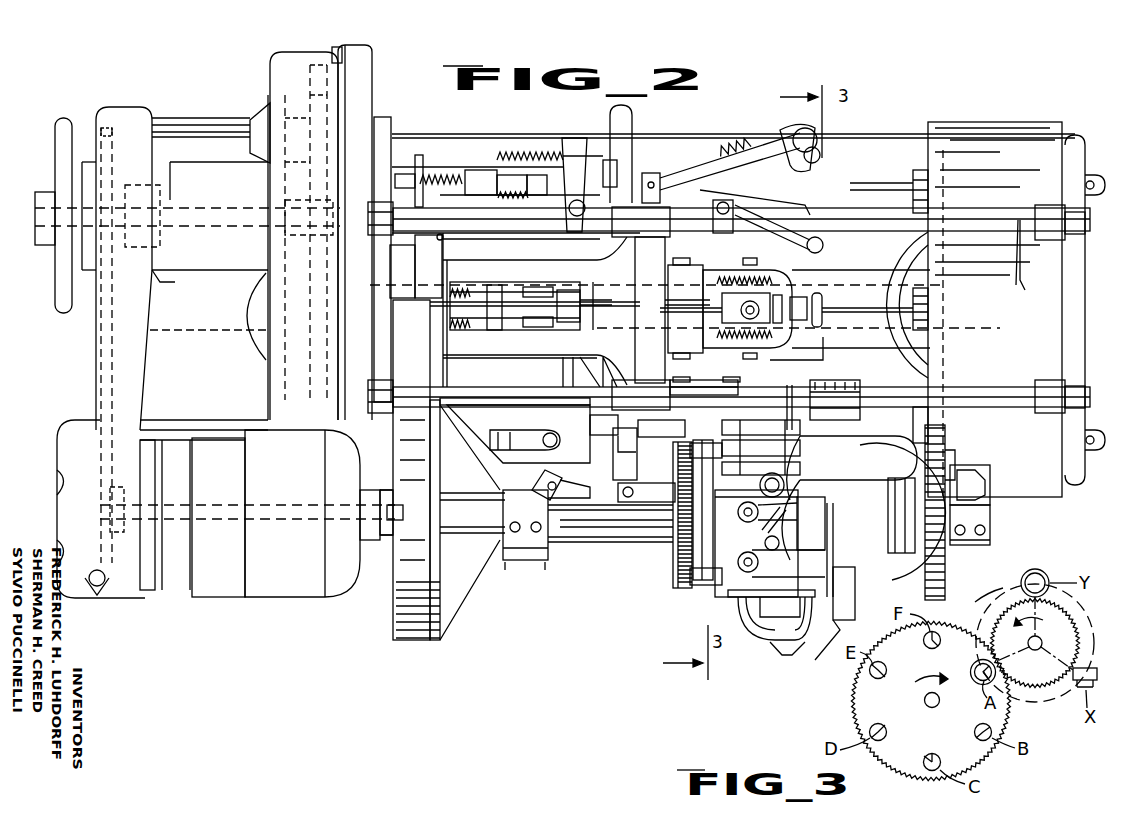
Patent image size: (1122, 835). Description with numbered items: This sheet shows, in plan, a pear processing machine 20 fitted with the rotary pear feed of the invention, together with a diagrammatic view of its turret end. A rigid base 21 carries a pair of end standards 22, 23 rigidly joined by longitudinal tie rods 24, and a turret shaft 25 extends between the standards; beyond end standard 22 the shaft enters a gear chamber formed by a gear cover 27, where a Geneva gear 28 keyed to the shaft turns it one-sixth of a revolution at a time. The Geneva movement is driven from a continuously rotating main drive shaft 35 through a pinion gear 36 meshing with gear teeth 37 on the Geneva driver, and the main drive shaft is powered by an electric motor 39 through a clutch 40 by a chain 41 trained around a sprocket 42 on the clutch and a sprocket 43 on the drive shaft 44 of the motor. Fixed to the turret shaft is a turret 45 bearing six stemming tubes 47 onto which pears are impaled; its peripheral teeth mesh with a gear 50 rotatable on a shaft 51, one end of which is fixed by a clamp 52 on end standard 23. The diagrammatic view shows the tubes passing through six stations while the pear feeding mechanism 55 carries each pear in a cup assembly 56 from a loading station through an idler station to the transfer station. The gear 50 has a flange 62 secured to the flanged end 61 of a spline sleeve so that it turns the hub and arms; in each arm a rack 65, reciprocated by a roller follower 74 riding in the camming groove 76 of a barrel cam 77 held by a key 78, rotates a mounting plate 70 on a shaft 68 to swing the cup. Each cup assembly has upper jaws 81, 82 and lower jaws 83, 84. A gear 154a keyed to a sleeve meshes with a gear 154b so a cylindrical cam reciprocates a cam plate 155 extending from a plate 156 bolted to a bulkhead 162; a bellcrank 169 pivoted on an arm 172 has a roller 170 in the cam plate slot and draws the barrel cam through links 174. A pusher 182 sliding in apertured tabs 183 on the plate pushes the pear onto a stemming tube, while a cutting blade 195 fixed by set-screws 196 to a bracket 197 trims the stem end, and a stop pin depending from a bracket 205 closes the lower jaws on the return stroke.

In FIG. 2, the pear processing machine 20 is at (900, 115).
In FIG. 2, the base 21 is at (470, 112).
In FIG. 2, the end standard 22 is at (372, 60).
In FIG. 2, the end standard 23 is at (1020, 125).
In FIG. 2, the tie rods 24 is at (1017, 340).
In FIG. 3, the turret shaft 25 is at (924, 699).
In FIG. 2, the gear cover 27 is at (268, 390).
In FIG. 2, the Geneva gear 28 is at (295, 120).
In FIG. 2, the main drive shaft 35 is at (243, 193).
In FIG. 2, the pinion gear 36 is at (280, 233).
In FIG. 2, the gear teeth 37 is at (322, 62).
In FIG. 2, the electric motor 39 is at (292, 597).
In FIG. 2, the clutch 40 is at (158, 280).
In FIG. 2, the chain 41 is at (112, 348).
In FIG. 2, the sprocket 42 is at (108, 195).
In FIG. 2, the sprocket 43 is at (100, 535).
In FIG. 2, the drive shaft 44 is at (265, 505).
In FIG. 2, the turret 45 is at (905, 262).
In FIG. 3, the turret 45 is at (868, 713).
In FIG. 2, the stemming tubes 47 is at (890, 163).
In FIG. 3, the stemming tubes 47 is at (973, 670).
In FIG. 2, the gear 50 is at (946, 567).
In FIG. 3, the gear 50 is at (998, 630).
In FIG. 2, the shaft 51 is at (990, 520).
In FIG. 2, the clamp 52 is at (990, 540).
In FIG. 2, the pear feeding mechanism 55 is at (672, 608).
In FIG. 3, the pear feeding mechanism 55 is at (1000, 622).
In FIG. 2, the cup assembly 56 is at (820, 500).
In FIG. 3, the cup assembly 56 is at (976, 687).
In FIG. 2, the flanged end 61 is at (905, 553).
In FIG. 2, the flange 62 is at (920, 470).
In FIG. 2, the rack 65 is at (722, 445).
In FIG. 2, the shaft 68 is at (790, 543).
In FIG. 2, the mounting plate 70 is at (790, 528).
In FIG. 2, the roller follower 74 is at (690, 450).
In FIG. 2, the camming groove 76 is at (673, 548).
In FIG. 2, the barrel cam 77 is at (668, 585).
In FIG. 2, the key 78 is at (580, 540).
In FIG. 2, the upper jaw 81 is at (822, 520).
In FIG. 2, the upper jaw 82 is at (800, 640).
In FIG. 2, the lower jaw 83 is at (863, 547).
In FIG. 2, the lower jaw 84 is at (812, 648).
In FIG. 2, the gear 154a is at (350, 350).
In FIG. 2, the gear 154b is at (378, 118).
In FIG. 2, the cam plate 155 is at (540, 412).
In FIG. 2, the plate 156 is at (600, 398).
In FIG. 2, the bulkhead 162 is at (613, 472).
In FIG. 2, the bellcrank 169 is at (538, 494).
In FIG. 2, the roller 170 is at (545, 445).
In FIG. 2, the arm 172 is at (530, 560).
In FIG. 2, the links 174 is at (572, 545).
In FIG. 2, the pusher 182 is at (685, 428).
In FIG. 2, the apertured tabs 183 is at (641, 447).
In FIG. 2, the cutting blade 195 is at (845, 463).
In FIG. 2, the set-screws 196 is at (799, 344).
In FIG. 2, the bracket 197 is at (835, 380).
In FIG. 2, the bracket 205 is at (715, 380).